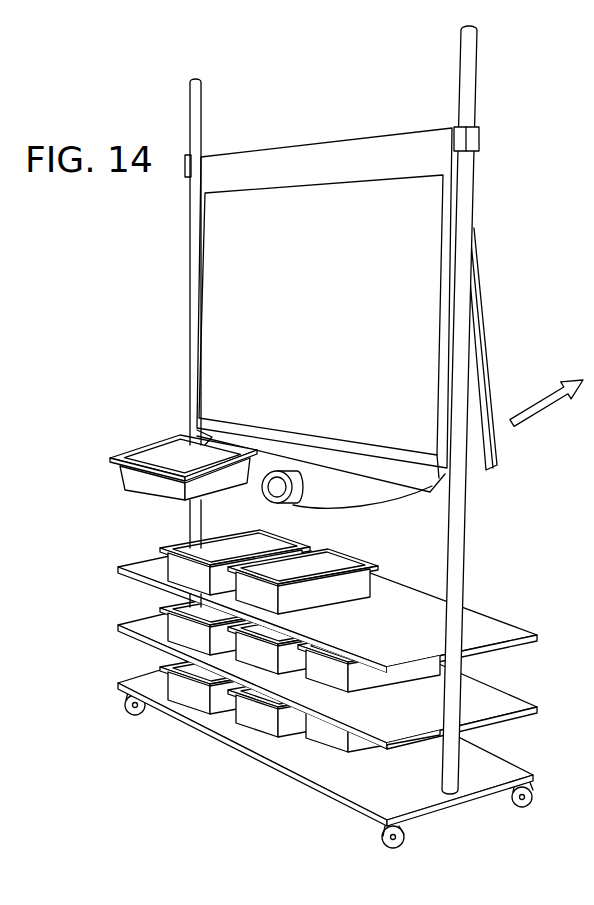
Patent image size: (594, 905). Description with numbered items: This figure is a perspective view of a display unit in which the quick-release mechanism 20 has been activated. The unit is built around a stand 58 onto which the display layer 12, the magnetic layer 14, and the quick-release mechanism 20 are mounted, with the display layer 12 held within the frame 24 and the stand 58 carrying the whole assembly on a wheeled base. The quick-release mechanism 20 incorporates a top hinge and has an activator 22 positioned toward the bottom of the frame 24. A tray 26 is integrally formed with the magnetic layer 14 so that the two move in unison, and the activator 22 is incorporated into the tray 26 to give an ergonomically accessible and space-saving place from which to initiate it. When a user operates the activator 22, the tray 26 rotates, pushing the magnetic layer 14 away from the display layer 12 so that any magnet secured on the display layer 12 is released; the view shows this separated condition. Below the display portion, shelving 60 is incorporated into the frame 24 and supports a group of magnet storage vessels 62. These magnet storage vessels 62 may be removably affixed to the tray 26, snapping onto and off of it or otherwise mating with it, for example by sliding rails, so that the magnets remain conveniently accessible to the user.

The quick-release mechanism 20 is at (315, 437).
The frame 24 is at (257, 168).
The display layer 12 is at (243, 298).
The tray 26 is at (387, 495).
The magnetic layer 14 is at (487, 357).
The activator 22 is at (275, 487).
The shelving 60 is at (485, 628).
The magnet storage vessels 62 is at (132, 480).
The stand 58 is at (458, 498).